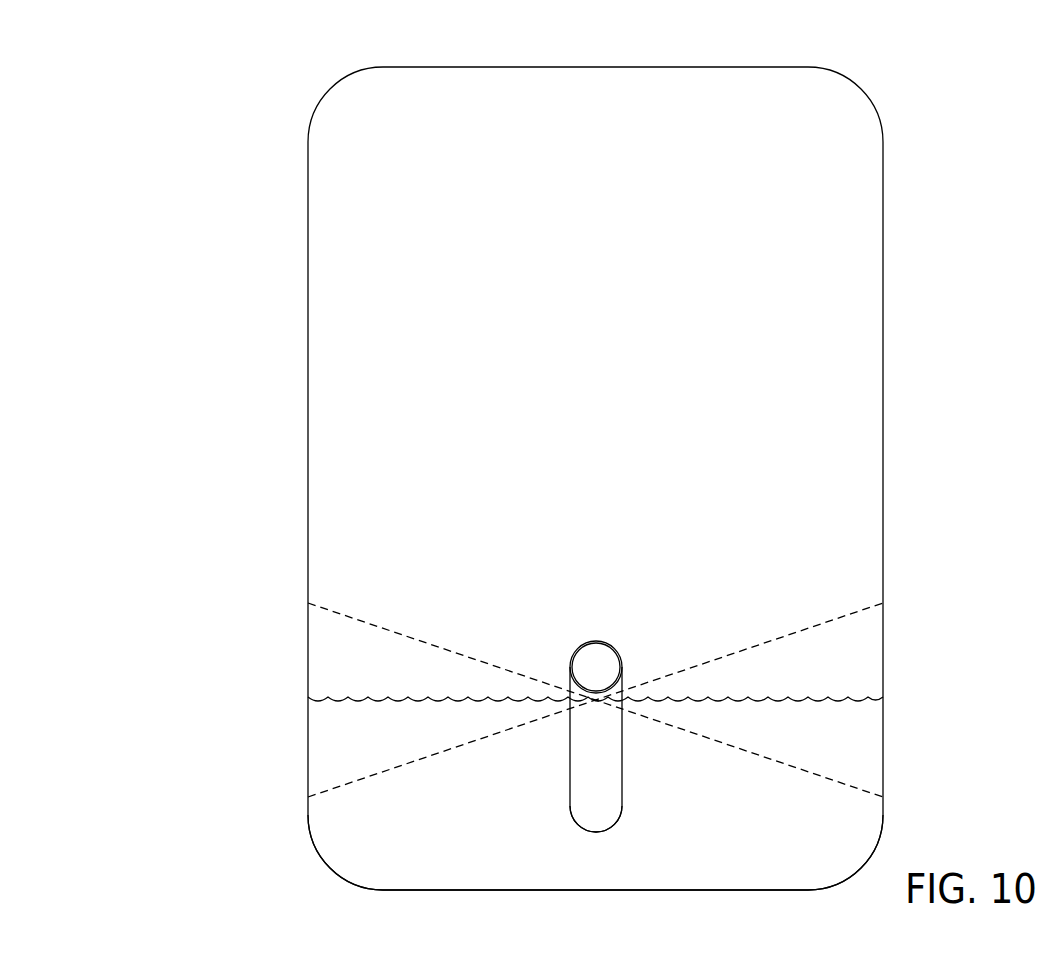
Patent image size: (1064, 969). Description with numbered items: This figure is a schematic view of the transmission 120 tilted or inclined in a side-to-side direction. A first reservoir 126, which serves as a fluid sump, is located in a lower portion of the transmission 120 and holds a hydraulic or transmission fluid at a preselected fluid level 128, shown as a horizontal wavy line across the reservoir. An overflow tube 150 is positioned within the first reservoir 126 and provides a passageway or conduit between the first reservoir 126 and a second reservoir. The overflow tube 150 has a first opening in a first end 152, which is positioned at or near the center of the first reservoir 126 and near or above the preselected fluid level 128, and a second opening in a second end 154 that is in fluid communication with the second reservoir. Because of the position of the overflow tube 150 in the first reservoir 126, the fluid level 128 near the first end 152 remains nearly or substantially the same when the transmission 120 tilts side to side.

The transmission 120 is at (300, 72).
The first reservoir 126 is at (398, 842).
The fluid level 128 is at (820, 697).
The overflow tube 150 is at (597, 735).
The first end 152 is at (587, 663).
The second end 154 is at (588, 822).